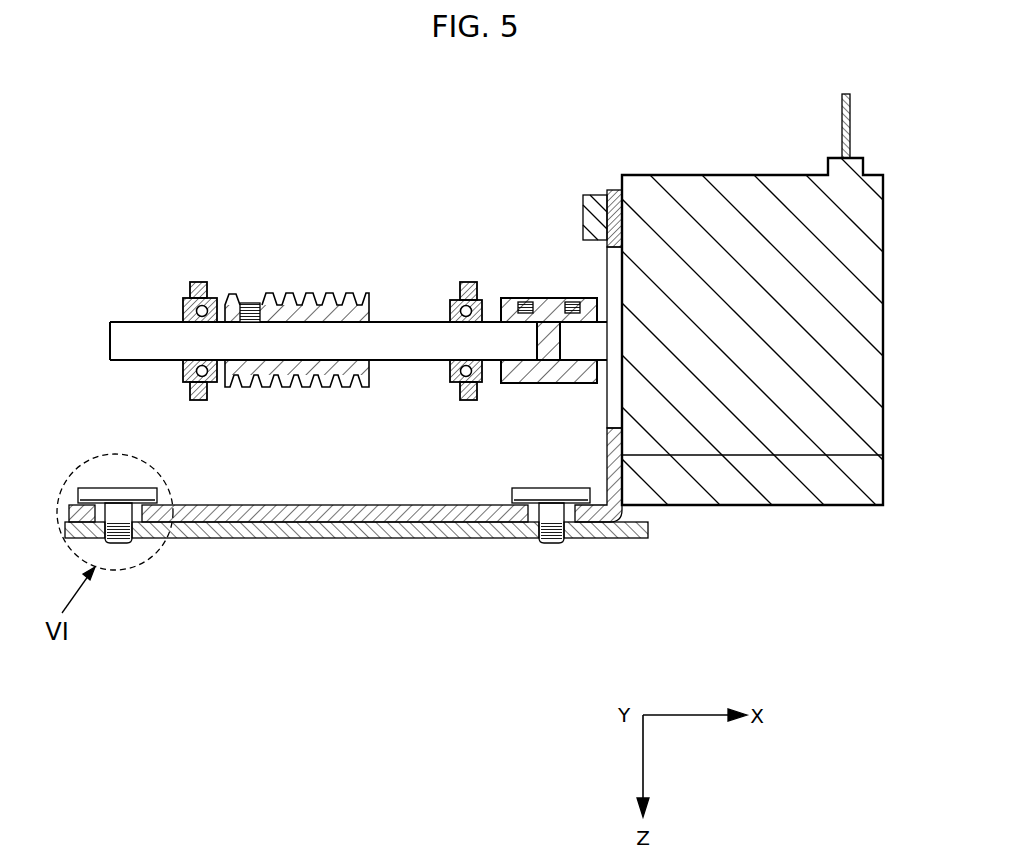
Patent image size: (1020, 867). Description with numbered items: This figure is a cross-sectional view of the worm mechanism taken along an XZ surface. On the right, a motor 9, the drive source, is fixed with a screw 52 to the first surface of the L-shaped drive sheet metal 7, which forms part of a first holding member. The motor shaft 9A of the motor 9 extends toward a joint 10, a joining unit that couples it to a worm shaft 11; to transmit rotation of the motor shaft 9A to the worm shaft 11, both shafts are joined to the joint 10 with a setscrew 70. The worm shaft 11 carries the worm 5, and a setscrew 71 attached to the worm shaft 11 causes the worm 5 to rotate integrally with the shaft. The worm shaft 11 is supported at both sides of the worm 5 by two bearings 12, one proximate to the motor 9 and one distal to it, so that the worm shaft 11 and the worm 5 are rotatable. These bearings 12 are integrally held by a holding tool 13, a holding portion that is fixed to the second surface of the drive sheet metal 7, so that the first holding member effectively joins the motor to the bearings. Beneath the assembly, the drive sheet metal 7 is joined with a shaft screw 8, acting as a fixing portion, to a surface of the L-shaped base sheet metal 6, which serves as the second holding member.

The worm 5 is at (307, 378).
The L-shaped base sheet metal 6 is at (395, 537).
The L-shaped drive sheet metal 7 is at (285, 512).
The shaft screw 8 is at (115, 537).
The motor 9 is at (808, 422).
The motor shaft 9A is at (588, 346).
The joint 10 is at (525, 368).
The worm shaft 11 is at (413, 335).
The bearings 12 is at (183, 309).
The holding tool 13 is at (470, 393).
The screw 52 is at (595, 210).
The setscrew 70 is at (570, 300).
The setscrew 71 is at (255, 300).